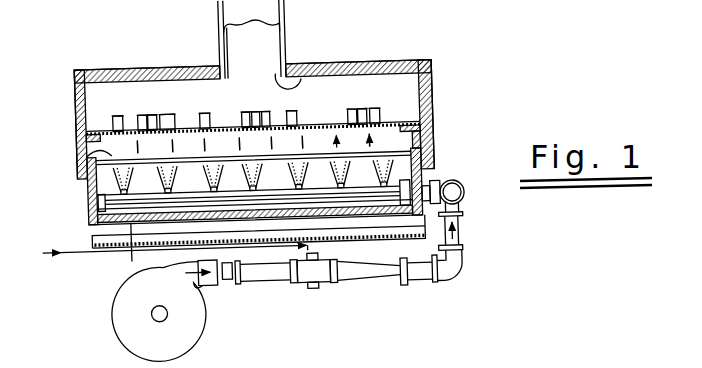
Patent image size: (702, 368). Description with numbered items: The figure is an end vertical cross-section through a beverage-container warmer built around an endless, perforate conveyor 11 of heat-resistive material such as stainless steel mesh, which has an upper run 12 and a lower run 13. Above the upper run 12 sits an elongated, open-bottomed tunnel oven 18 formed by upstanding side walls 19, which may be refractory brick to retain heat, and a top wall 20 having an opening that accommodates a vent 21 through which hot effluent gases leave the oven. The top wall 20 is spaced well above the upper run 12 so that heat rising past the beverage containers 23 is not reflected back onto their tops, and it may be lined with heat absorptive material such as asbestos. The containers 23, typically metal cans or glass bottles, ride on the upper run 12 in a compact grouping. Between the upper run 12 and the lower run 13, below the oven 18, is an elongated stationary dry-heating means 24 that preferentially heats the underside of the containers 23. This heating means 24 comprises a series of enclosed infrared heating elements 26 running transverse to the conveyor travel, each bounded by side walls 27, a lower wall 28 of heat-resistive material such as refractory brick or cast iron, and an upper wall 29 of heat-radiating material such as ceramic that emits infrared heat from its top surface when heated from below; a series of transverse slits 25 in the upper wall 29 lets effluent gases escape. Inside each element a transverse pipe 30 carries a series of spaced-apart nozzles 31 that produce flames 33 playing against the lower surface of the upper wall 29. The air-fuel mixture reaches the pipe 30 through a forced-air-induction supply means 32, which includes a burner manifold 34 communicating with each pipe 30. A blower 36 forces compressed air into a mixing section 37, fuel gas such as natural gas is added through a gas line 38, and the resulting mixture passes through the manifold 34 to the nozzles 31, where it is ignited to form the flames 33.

The endless perforate conveyor 11 is at (320, 121).
The upper run 12 is at (329, 124).
The lower run 13 is at (401, 246).
The tunnel oven 18 is at (441, 79).
The side walls 19 is at (78, 102).
The top wall 20 is at (181, 65).
The vent 21 is at (309, 70).
The beverage containers 23 is at (247, 110).
The dry-heating means 24 is at (395, 130).
The transverse slits 25 is at (200, 156).
The infrared heating elements 26 is at (87, 193).
The side walls 27 is at (88, 181).
The lower wall 28 is at (129, 258).
The upper wall 29 is at (92, 151).
The transverse pipe 30 is at (318, 194).
The nozzles 31 is at (223, 187).
The supply means 32 is at (475, 259).
The flames 33 is at (160, 176).
The burner manifold 34 is at (461, 189).
The blower 36 is at (187, 332).
The mixing section 37 is at (311, 291).
The gas line 38 is at (70, 247).